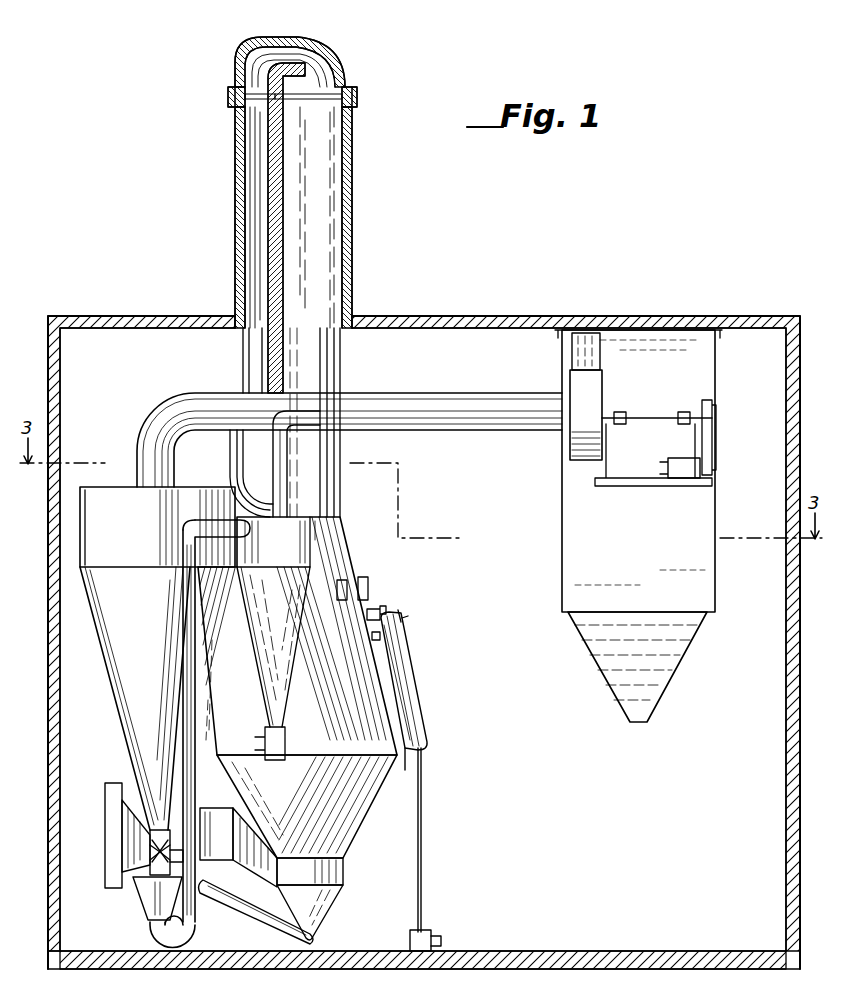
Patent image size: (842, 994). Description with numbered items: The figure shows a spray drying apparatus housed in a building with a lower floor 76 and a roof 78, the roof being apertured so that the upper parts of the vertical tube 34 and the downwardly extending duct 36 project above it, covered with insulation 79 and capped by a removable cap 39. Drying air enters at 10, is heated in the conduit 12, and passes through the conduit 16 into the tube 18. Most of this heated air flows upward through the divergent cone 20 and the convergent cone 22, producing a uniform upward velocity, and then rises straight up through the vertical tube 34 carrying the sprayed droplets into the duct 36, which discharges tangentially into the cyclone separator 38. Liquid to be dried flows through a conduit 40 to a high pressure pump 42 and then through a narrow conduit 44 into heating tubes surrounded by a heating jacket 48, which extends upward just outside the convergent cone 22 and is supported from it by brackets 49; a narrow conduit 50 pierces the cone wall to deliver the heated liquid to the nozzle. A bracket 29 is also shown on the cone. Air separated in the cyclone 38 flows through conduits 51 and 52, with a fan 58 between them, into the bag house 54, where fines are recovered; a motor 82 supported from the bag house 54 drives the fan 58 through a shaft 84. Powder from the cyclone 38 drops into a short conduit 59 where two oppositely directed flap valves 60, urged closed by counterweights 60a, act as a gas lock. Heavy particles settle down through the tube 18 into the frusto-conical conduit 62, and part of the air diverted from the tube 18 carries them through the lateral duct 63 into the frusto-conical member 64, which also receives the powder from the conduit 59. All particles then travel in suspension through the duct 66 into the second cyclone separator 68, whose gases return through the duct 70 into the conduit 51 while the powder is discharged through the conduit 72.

The air entrance 10 is at (112, 783).
The conduit 12 is at (210, 808).
The conduit 16 is at (258, 872).
The tube 18 is at (346, 870).
The divergent cone 20 is at (318, 820).
The convergent cone 22 is at (335, 700).
The mounting bracket 29 is at (368, 588).
The vertical tube 34 is at (318, 282).
The downwardly extending duct 36 is at (240, 196).
The cyclone separator 38 is at (138, 534).
The removable cap 39 is at (330, 60).
The conduit 40 is at (437, 936).
The high pressure pump 42 is at (410, 940).
The narrow conduit 44 is at (424, 878).
The heating jacket 48 is at (413, 690).
The brackets 49 is at (374, 636).
The narrow conduit 50 is at (378, 609).
The conduit 51 is at (452, 393).
The conduit 52 is at (602, 356).
The bag house 54 is at (656, 564).
The fan 58 is at (597, 407).
The short conduit 59 is at (152, 844).
The flap valves 60 is at (150, 856).
The counterweights 60a is at (178, 858).
The frusto-conical conduit 62 is at (332, 916).
The lateral duct 63 is at (250, 915).
The frusto-conical member 64 is at (140, 912).
The duct 66 is at (190, 690).
The cyclone separator 68 is at (282, 596).
The duct 70 is at (282, 480).
The conduit 72 is at (284, 744).
The lower floor 76 is at (543, 951).
The roof 78 is at (466, 316).
The insulation 79 is at (272, 244).
The motor 82 is at (700, 465).
The shaft 84 is at (656, 418).